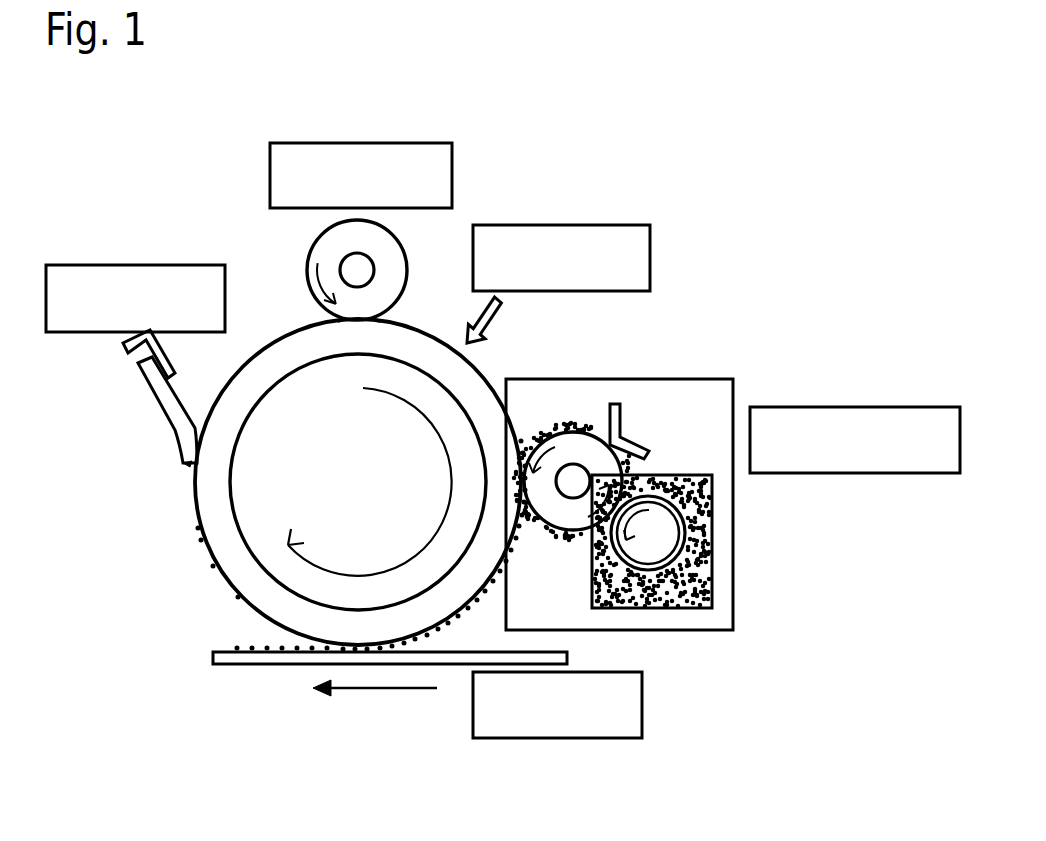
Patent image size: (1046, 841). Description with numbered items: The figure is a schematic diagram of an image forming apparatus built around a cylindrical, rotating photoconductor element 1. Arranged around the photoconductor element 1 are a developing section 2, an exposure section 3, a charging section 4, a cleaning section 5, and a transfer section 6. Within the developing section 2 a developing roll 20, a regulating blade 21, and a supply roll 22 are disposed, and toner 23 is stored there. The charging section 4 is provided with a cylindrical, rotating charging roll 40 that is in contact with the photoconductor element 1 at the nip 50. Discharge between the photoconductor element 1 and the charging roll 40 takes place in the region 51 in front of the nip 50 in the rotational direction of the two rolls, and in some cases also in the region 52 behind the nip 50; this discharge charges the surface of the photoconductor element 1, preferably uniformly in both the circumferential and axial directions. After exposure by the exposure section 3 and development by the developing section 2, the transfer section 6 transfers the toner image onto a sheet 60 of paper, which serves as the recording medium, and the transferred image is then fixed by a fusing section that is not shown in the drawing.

The photoconductor element 1 is at (197, 518).
The developing section 2 is at (785, 407).
The exposure section 3 is at (585, 225).
The charging section 4 is at (367, 143).
The cleaning section 5 is at (90, 265).
The transfer section 6 is at (503, 738).
The developing roll 20 is at (577, 437).
The regulating blade 21 is at (623, 418).
The supply roll 22 is at (667, 533).
The toner 23 is at (707, 570).
The charging roll 40 is at (308, 262).
The nip 50 is at (356, 320).
The region in front of the nip 51 is at (345, 318).
The region behind the nip 52 is at (378, 322).
The sheet of paper 60 is at (257, 667).